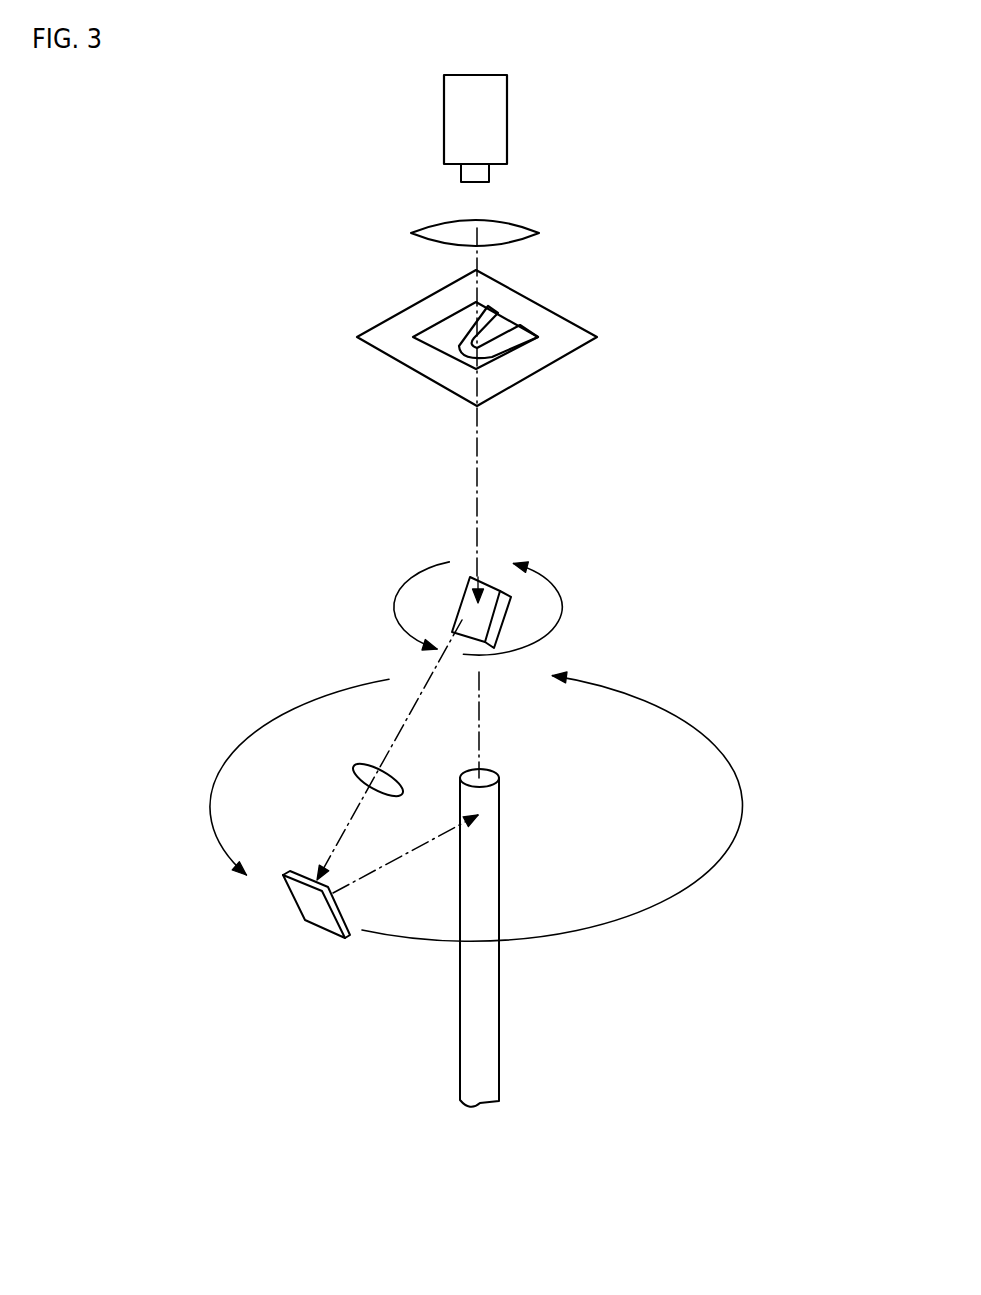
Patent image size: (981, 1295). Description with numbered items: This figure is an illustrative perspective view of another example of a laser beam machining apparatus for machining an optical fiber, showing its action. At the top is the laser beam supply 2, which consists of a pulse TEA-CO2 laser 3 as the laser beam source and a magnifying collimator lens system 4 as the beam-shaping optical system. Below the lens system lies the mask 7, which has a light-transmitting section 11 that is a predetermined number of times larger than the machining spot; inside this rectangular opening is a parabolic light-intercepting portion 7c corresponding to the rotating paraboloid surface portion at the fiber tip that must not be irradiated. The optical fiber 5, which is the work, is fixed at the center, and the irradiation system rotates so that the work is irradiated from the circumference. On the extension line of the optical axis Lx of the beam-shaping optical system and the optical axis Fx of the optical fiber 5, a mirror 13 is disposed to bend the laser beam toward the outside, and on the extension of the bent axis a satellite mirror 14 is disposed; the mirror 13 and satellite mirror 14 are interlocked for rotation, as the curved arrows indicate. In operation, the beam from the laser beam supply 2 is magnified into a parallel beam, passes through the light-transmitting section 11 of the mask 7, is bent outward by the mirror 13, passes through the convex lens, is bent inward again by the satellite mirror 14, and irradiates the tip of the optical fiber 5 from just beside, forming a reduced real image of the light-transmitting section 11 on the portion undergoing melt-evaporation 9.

The laser beam supply 2 is at (517, 160).
The pulse TEA-CO2 laser 3 is at (490, 108).
The magnifying collimator lens system 4 is at (496, 210).
The mask 7 is at (562, 332).
The parabolic light-intercepting portion 7c is at (490, 337).
The light-transmitting section 11 is at (452, 323).
The mirror 13 is at (480, 622).
The portion undergoing melt-evaporation 9 is at (357, 767).
The satellite mirror 14 is at (320, 917).
The optical fiber 5 is at (482, 1018).
The optical axis of the beam-shaping optical system Lx is at (478, 482).
The optical axis of the optical fiber Fx is at (479, 727).